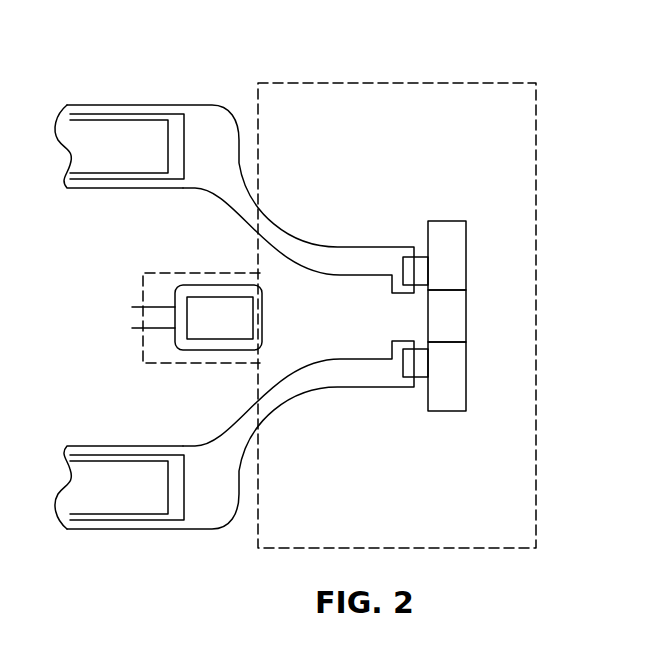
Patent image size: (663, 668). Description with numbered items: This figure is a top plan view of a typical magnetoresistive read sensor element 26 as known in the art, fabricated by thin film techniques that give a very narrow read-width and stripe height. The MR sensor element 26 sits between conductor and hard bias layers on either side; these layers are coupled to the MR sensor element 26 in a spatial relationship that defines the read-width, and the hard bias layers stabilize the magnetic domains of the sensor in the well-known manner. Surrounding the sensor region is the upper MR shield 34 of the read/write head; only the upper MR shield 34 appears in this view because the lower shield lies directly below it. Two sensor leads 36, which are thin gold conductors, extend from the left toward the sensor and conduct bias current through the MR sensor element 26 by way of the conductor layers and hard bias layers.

The MR sensor element 26 is at (428, 313).
The upper MR shield 34 is at (537, 500).
The sensor leads 36 is at (212, 112).